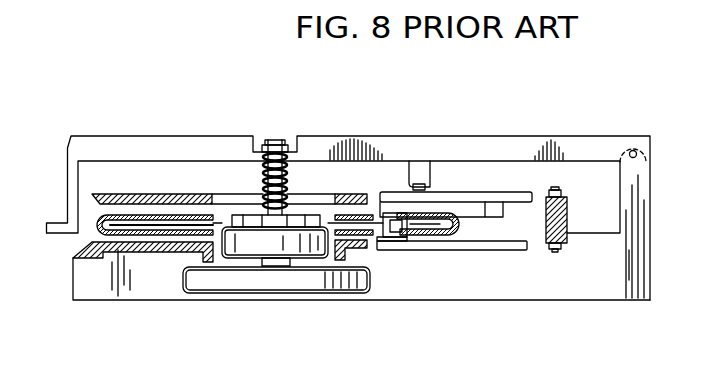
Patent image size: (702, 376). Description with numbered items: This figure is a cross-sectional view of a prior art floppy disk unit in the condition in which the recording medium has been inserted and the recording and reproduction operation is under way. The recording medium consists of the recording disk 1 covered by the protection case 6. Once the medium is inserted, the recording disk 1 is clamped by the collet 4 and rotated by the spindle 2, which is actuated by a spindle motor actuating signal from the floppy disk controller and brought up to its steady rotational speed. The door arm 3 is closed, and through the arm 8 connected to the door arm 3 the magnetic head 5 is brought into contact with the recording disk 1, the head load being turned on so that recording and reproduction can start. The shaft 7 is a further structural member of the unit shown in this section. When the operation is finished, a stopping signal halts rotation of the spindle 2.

The recording disk 1 is at (163, 243).
The spindle 2 is at (303, 250).
The door arm 3 is at (177, 146).
The collet 4 is at (300, 212).
The magnetic head 5 is at (396, 238).
The protection case 6 is at (138, 196).
The shaft 7 is at (273, 138).
The arm 8 is at (418, 168).